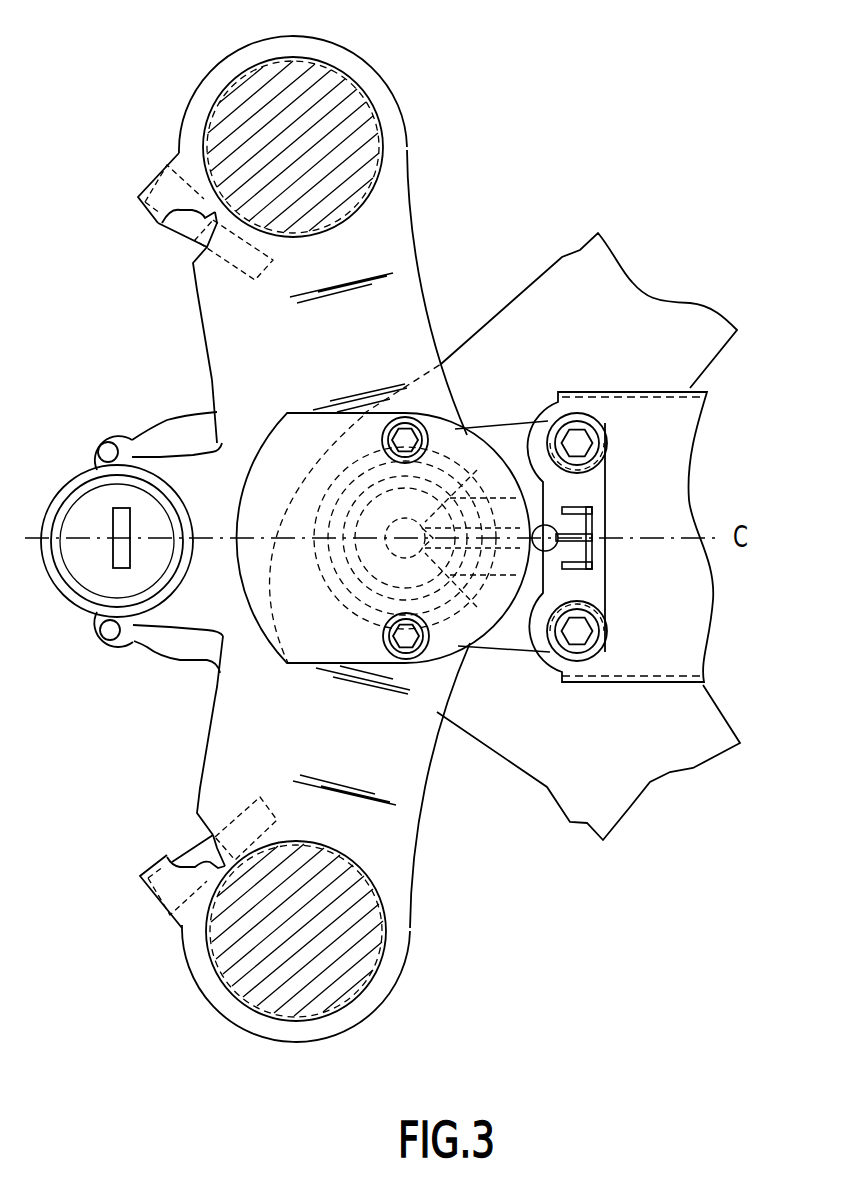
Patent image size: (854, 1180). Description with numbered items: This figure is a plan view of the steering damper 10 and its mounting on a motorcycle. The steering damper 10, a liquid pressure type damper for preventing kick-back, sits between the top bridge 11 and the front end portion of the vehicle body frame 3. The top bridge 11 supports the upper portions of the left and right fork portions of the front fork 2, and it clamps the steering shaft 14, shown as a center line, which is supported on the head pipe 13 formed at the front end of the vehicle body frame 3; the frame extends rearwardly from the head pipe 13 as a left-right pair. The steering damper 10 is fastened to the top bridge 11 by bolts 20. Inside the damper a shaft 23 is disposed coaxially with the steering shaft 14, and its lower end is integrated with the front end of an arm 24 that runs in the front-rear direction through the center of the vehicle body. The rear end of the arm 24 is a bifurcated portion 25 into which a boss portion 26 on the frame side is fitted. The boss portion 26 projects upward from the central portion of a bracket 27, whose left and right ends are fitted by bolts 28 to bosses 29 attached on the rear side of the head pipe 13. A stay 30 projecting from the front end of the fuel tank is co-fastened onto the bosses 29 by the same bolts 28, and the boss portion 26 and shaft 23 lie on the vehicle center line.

The front fork 2 is at (247, 93).
The vehicle body frame 3 is at (568, 275).
The steering damper 10 is at (277, 410).
The top bridge 11 is at (215, 294).
The head pipe 13 is at (285, 665).
The steering shaft 14 is at (366, 565).
The bolts 20 is at (408, 437).
The shaft 23 is at (400, 528).
The arm 24 is at (430, 663).
The bifurcated portion 25 is at (590, 503).
The boss portion 26 is at (552, 543).
The bracket 27 is at (597, 578).
The bolts 28 is at (582, 443).
The bosses 29 is at (600, 469).
The stay 30 is at (700, 572).